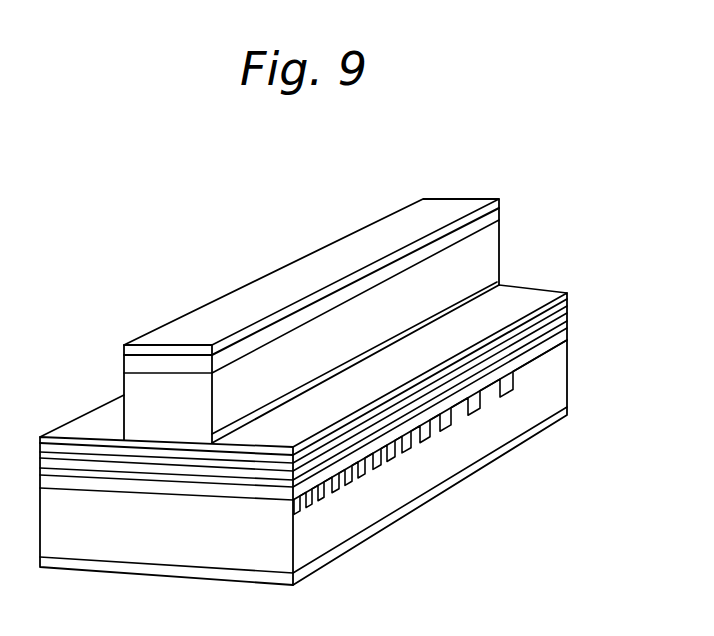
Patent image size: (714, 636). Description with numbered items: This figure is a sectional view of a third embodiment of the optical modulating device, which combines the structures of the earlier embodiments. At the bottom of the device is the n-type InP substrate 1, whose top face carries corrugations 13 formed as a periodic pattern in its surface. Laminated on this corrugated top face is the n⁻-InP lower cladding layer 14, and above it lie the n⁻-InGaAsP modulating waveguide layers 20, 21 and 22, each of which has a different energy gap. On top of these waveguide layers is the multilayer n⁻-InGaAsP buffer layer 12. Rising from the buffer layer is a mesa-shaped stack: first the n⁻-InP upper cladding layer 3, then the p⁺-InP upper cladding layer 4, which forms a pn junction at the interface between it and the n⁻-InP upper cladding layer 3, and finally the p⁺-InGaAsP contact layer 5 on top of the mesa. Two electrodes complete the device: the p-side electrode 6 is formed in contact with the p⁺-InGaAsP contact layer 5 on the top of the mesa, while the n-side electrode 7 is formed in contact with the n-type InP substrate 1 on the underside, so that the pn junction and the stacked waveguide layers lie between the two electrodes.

The n-type InP substrate 1 is at (557, 393).
The n⁻-InP upper cladding layer 3 is at (497, 283).
The p⁺-InP upper cladding layer 4 is at (497, 258).
The p⁺-InGaAsP contact layer 5 is at (497, 222).
The p-side electrode 6 is at (500, 212).
The n-side electrode 7 is at (567, 413).
The multilayer n⁻-InGaAsP buffer layer 12 is at (568, 291).
The corrugations 13 is at (510, 378).
The n⁻-InP lower cladding layer 14 is at (565, 336).
The n⁻-InGaAsP modulating waveguide layer 20 is at (566, 324).
The n⁻-InGaAsP modulating waveguide layer 21 is at (566, 313).
The n⁻-InGaAsP modulating waveguide layer 22 is at (566, 302).